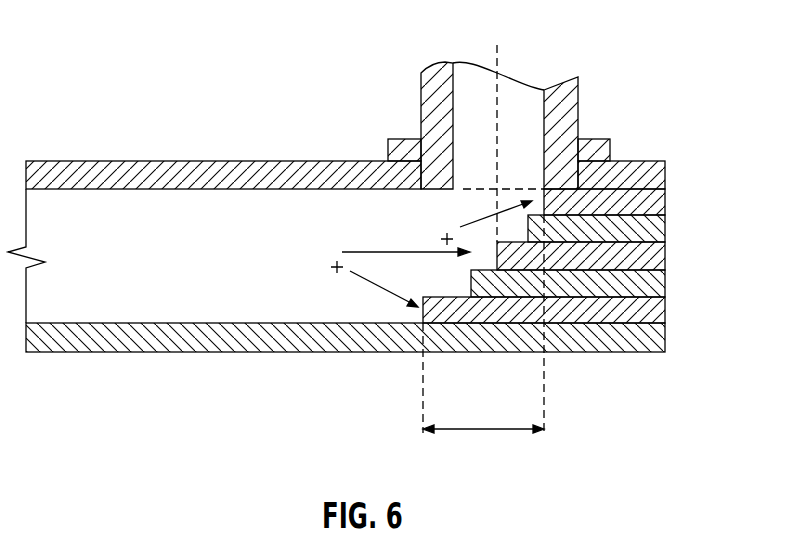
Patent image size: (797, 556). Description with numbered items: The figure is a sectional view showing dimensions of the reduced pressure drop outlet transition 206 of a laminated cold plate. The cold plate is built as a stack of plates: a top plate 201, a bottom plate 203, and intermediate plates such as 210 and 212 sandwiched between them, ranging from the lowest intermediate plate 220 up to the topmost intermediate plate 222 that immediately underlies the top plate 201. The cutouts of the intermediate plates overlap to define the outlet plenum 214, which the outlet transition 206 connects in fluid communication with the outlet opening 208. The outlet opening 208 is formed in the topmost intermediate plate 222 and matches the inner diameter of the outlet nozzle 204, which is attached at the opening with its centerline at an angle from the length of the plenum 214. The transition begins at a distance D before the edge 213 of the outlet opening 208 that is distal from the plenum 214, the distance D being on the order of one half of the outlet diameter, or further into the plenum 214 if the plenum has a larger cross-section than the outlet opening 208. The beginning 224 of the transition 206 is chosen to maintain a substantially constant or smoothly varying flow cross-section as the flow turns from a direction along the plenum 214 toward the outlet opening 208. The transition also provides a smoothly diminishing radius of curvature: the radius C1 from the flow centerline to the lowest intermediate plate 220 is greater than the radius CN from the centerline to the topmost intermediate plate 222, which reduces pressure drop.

The top plate 201 is at (157, 161).
The bottom plate 203 is at (193, 352).
The outlet nozzle 204 is at (421, 100).
The outlet transition 206 is at (398, 242).
The outlet opening 208 is at (477, 188).
The intermediate plate 210 is at (667, 232).
The intermediate plate 212 is at (667, 283).
The distal edge of the outlet opening 213 is at (545, 88).
The outlet plenum 214 is at (193, 272).
The lowest intermediate plate 220 is at (667, 313).
The topmost intermediate plate 222 is at (667, 205).
The beginning of the transition 224 is at (517, 325).
The radius of curvature to the lowest intermediate plate C1 is at (370, 285).
The radius of curvature to the topmost intermediate plate CN is at (477, 222).
The distance D is at (483, 450).